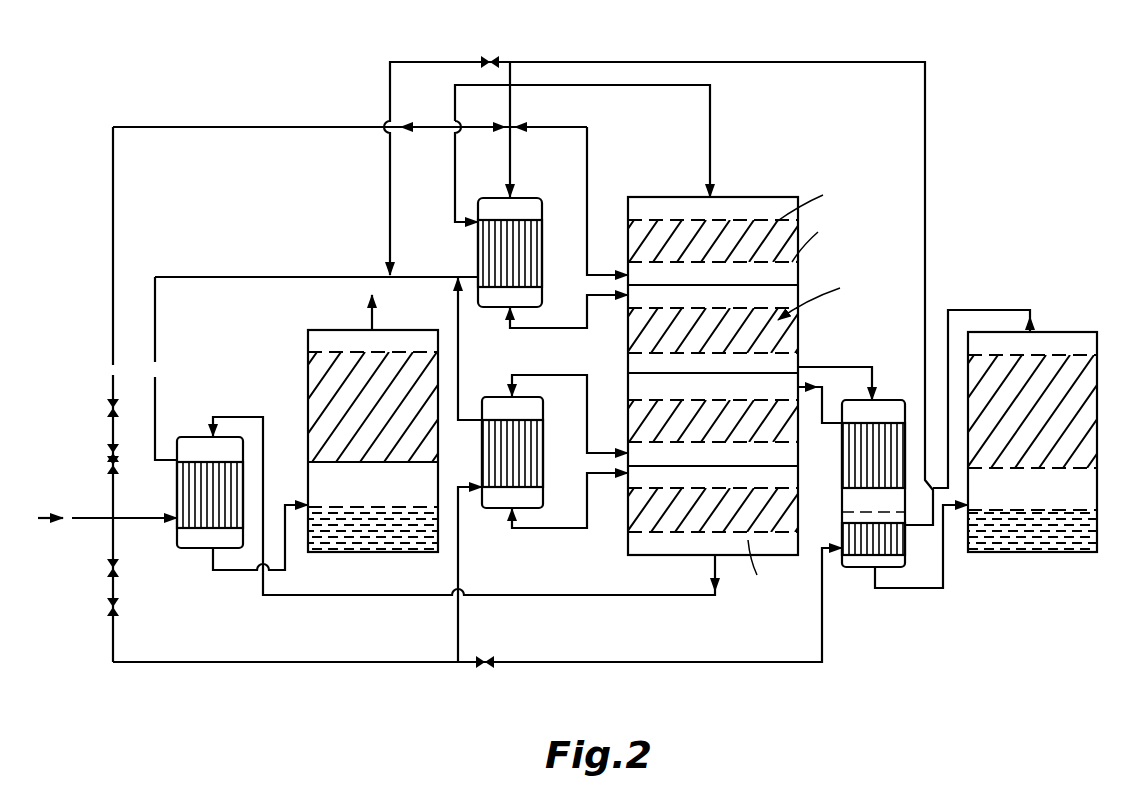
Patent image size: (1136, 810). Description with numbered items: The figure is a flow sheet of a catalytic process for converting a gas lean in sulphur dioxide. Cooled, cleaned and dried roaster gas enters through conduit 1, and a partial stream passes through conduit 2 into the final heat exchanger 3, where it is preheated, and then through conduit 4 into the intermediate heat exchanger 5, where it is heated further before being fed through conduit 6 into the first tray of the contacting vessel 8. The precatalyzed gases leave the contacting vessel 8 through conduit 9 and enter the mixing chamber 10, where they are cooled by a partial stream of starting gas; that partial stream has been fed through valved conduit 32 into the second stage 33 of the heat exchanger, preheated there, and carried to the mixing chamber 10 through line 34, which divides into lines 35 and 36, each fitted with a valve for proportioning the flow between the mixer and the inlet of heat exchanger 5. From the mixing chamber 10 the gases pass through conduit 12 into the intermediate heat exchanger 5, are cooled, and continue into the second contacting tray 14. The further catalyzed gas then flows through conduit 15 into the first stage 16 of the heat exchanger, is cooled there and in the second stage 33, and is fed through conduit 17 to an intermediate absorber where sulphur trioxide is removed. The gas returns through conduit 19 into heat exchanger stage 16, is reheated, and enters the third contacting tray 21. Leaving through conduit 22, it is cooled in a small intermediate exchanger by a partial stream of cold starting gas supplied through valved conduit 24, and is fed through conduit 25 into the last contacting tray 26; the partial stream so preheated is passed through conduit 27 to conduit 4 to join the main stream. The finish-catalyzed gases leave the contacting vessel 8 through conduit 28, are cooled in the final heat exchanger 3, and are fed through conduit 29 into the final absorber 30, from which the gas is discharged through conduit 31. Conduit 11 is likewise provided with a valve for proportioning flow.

The conduit 1 is at (81, 524).
The conduit 2 is at (148, 524).
The final heat exchanger 3 is at (177, 492).
The conduit 4 is at (209, 276).
The intermediate heat exchanger 5 is at (543, 262).
The conduit 6 is at (455, 175).
The contacting vessel 8 is at (720, 367).
The conduit 9 is at (587, 170).
The mixing chamber 10 is at (511, 126).
The conduit 11 is at (113, 325).
The conduit 12 is at (509, 167).
The second contacting tray 14 is at (800, 340).
The conduit 15 is at (856, 350).
The first stage of heat exchanger 16 is at (877, 491).
The conduit 17 is at (912, 592).
The conduit 19 is at (1005, 308).
The third contacting tray 21 is at (643, 395).
The conduit 22 is at (525, 375).
The conduit 24 is at (357, 662).
The conduit 25 is at (558, 530).
The last contacting tray 26 is at (800, 515).
The conduit 27 is at (459, 382).
The conduit 28 is at (550, 440).
The conduit 29 is at (236, 572).
The final absorber 30 is at (308, 392).
The conduit 31 is at (385, 310).
The conduit 32 is at (652, 662).
The second stage of heat exchanger 33 is at (908, 552).
The conduit 34 is at (926, 200).
The line 35 is at (520, 95).
The line 36 is at (403, 61).